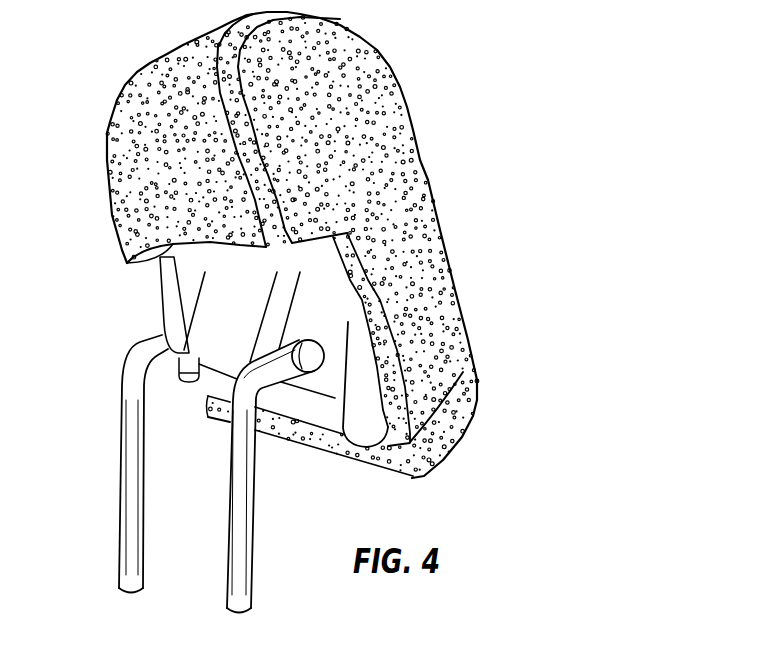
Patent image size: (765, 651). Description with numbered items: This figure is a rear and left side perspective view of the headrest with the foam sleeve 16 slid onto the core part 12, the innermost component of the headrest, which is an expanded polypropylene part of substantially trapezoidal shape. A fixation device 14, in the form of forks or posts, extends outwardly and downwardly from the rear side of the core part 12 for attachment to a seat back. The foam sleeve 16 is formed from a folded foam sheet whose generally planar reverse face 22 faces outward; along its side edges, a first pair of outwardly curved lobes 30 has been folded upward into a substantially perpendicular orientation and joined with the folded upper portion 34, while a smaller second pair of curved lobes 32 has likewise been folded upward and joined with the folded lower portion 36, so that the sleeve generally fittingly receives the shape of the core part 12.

The core part 12 is at (377, 424).
The fixation device 14 is at (122, 515).
The foam sleeve 16 is at (408, 224).
The reverse face 22 is at (124, 180).
The outwardly curved lobes 30 is at (378, 122).
The second pair of outwardly curved lobes 32 is at (443, 314).
The upper portion 34 is at (162, 80).
The lower portion 36 is at (306, 448).